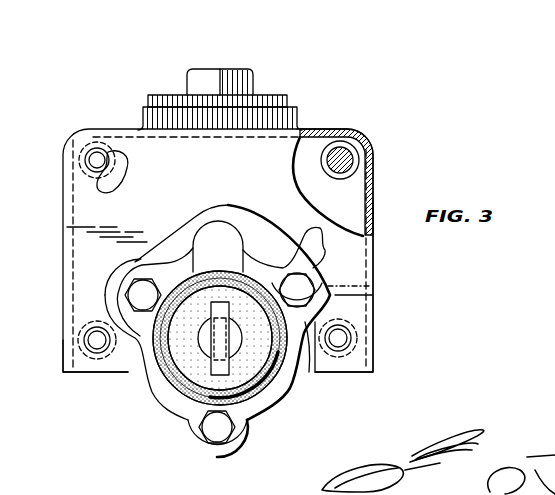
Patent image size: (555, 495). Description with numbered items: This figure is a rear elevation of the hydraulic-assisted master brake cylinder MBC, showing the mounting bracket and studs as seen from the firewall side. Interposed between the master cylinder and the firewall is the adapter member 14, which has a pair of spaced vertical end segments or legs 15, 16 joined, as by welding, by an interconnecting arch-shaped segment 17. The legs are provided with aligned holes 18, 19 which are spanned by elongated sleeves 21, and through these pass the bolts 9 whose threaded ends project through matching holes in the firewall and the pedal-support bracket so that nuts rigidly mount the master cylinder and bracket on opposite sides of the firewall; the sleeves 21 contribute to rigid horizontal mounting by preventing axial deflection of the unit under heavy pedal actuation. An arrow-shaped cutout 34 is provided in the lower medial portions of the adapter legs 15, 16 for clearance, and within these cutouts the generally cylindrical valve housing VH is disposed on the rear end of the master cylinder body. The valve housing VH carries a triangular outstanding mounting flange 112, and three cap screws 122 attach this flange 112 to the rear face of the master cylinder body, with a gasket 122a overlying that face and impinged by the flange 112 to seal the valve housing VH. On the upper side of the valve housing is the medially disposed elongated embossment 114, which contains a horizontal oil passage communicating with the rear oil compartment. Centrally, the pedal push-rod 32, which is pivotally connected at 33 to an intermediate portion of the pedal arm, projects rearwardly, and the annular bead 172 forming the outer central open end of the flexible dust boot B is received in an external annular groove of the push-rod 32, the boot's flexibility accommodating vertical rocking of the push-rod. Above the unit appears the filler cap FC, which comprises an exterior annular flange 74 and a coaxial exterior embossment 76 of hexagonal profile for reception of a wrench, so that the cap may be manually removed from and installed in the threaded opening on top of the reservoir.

The hydraulic-assisted master brake cylinder MBC is at (106, 124).
The filler cap FC is at (202, 78).
The exterior embossment 76 is at (241, 68).
The exterior annular flange 74 is at (295, 100).
The arch-shaped segment 17 is at (322, 133).
The bolts 9 is at (341, 159).
The elongated sleeves 21 is at (76, 186).
The vertical end segment (leg) 15 is at (351, 197).
The aligned hole 19 is at (88, 160).
The aligned hole 18 is at (97, 178).
The arrow-shaped cutout 34 is at (183, 222).
The elongated embossment 114 is at (220, 235).
The gasket 122a is at (168, 250).
The cap screws 122 is at (298, 289).
The vertical end segment (leg) 16 is at (82, 268).
The adapter member 14 is at (377, 283).
The valve housing VH is at (126, 379).
The annular bead 172 is at (217, 355).
The pivotal connection 33 is at (207, 372).
The mounting flange 112 is at (192, 420).
The push-rod 32 is at (255, 398).
The dust boot B is at (275, 379).